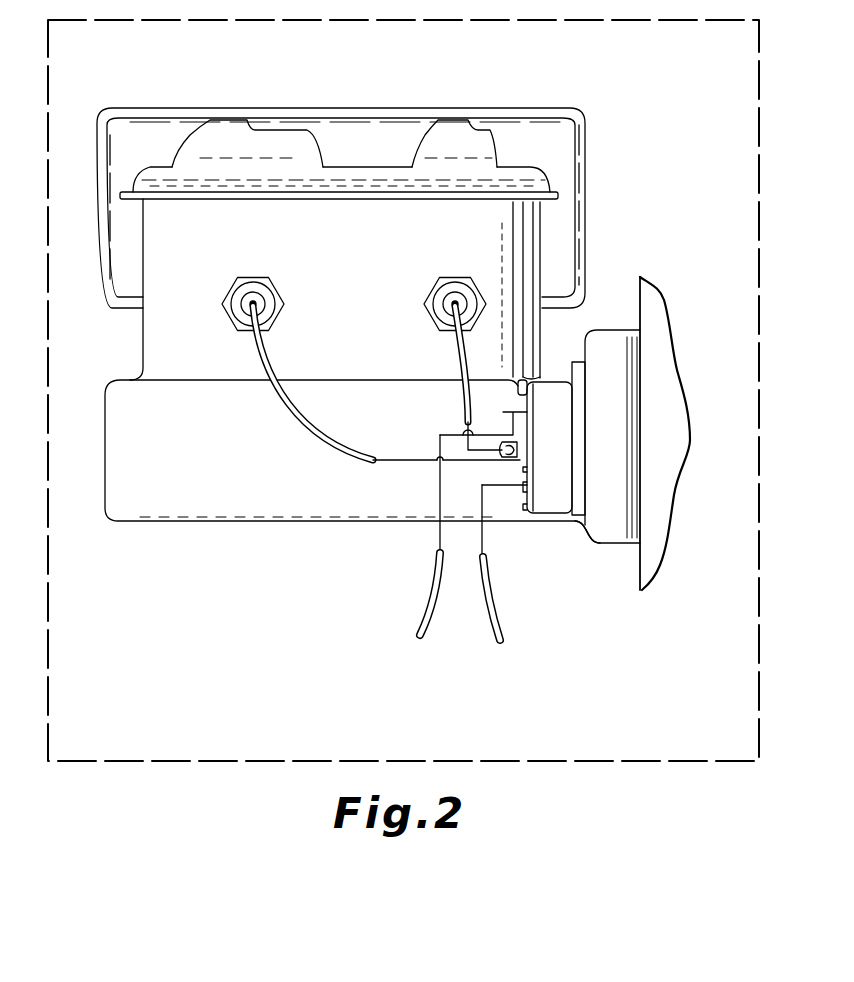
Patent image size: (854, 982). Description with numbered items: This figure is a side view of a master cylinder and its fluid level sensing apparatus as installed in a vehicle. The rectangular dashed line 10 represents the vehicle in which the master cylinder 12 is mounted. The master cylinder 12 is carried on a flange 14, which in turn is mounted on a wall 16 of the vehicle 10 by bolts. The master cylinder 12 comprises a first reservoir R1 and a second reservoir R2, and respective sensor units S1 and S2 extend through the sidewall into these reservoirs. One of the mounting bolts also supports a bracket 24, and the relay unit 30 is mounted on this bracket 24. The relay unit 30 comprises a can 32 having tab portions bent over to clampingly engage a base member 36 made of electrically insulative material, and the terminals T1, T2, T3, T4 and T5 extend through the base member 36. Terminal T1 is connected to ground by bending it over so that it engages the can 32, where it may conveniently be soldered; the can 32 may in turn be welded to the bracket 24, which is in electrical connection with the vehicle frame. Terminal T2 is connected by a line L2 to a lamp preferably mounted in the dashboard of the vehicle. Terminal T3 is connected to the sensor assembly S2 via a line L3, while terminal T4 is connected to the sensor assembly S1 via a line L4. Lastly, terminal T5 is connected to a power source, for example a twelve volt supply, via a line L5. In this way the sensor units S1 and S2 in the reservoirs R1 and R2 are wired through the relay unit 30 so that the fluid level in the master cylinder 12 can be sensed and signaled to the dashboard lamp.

The vehicle 10 is at (226, 766).
The master cylinder 12 is at (378, 108).
The flange 14 is at (623, 533).
The wall 16 is at (663, 412).
The bracket 24 is at (589, 388).
The relay unit 30 is at (548, 378).
The can 32 is at (561, 413).
The base member 36 is at (531, 492).
The first reservoir R1 is at (308, 150).
The second reservoir R2 is at (433, 145).
The sensor unit S1 is at (255, 278).
The sensor unit S2 is at (461, 283).
The line L2 is at (425, 598).
The line L3 is at (452, 360).
The line L4 is at (296, 418).
The line L5 is at (499, 592).
The terminal T1 is at (522, 377).
The terminal T2 is at (512, 411).
The terminal T3 is at (510, 441).
The terminal T4 is at (514, 449).
The terminal T5 is at (510, 485).